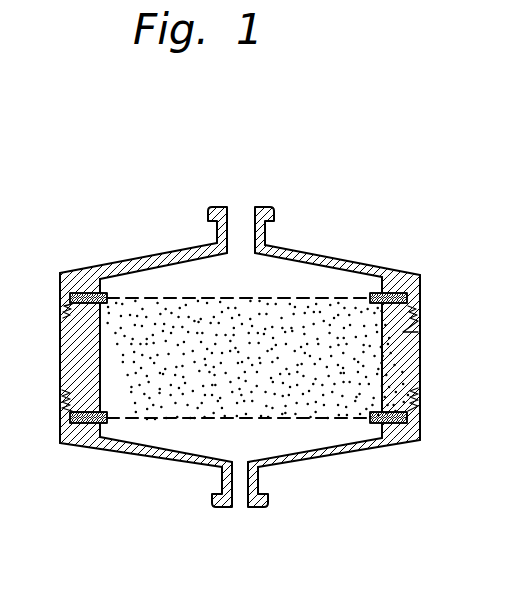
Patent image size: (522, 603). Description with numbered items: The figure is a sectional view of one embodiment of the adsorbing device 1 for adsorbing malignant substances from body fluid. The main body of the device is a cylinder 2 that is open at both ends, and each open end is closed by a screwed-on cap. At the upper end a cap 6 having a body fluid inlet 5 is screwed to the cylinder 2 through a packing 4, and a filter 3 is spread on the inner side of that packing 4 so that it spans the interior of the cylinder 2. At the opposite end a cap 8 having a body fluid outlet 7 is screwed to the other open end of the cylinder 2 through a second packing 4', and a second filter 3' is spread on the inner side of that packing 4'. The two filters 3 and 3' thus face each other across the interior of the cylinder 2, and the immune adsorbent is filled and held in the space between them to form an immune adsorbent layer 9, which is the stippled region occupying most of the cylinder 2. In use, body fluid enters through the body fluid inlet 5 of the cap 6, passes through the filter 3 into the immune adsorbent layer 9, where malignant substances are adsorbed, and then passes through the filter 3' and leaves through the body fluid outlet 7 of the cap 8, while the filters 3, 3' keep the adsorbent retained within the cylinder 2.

The adsorbing device 1 is at (175, 245).
The cylinder 2 is at (420, 357).
The filter 3 is at (241, 254).
The filter 3' is at (211, 458).
The packing 4 is at (241, 261).
The packing 4' is at (211, 415).
The body fluid inlet 5 is at (242, 218).
The cap 6 is at (140, 258).
The body fluid outlet 7 is at (235, 508).
The cap 8 is at (323, 462).
The immune adsorbent layer 9 is at (133, 383).